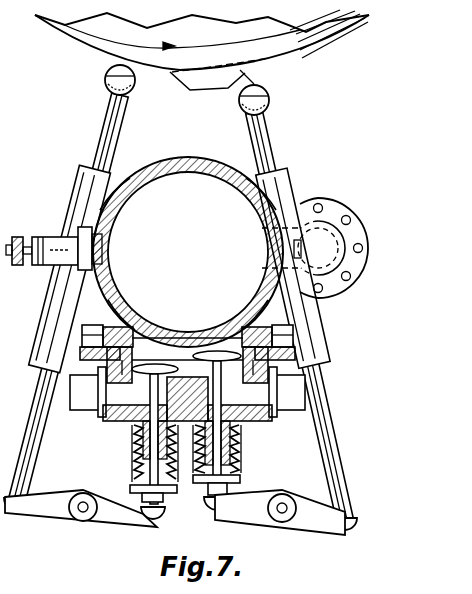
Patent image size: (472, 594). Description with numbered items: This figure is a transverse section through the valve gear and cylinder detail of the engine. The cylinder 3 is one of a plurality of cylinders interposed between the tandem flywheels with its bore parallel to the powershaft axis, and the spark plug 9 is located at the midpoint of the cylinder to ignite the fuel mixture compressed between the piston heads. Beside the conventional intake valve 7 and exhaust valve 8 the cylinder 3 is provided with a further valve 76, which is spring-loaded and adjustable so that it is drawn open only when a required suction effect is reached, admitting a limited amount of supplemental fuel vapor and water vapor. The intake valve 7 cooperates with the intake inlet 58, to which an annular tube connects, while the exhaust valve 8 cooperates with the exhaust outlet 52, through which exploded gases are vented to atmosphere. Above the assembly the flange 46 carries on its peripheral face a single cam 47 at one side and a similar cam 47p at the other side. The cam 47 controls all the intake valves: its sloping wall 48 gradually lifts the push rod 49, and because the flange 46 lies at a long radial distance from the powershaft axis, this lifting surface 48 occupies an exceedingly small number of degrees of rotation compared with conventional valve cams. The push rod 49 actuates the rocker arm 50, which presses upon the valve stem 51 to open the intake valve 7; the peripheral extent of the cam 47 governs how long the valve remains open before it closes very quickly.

The cylinder 3 is at (190, 157).
The intake valve 7 is at (215, 351).
The exhaust valve 8 is at (152, 364).
The spark plug 9 is at (50, 237).
The flange 46 is at (340, 35).
The cam 47 is at (225, 92).
The cam 47p is at (330, 55).
The sloping wall 48 is at (270, 68).
The push rod 49 is at (273, 126).
The rocker arm 50 is at (326, 527).
The valve stem 51 is at (228, 496).
The exhaust outlet 52 is at (122, 412).
The intake inlet 58 is at (258, 412).
The valve 76 is at (342, 240).